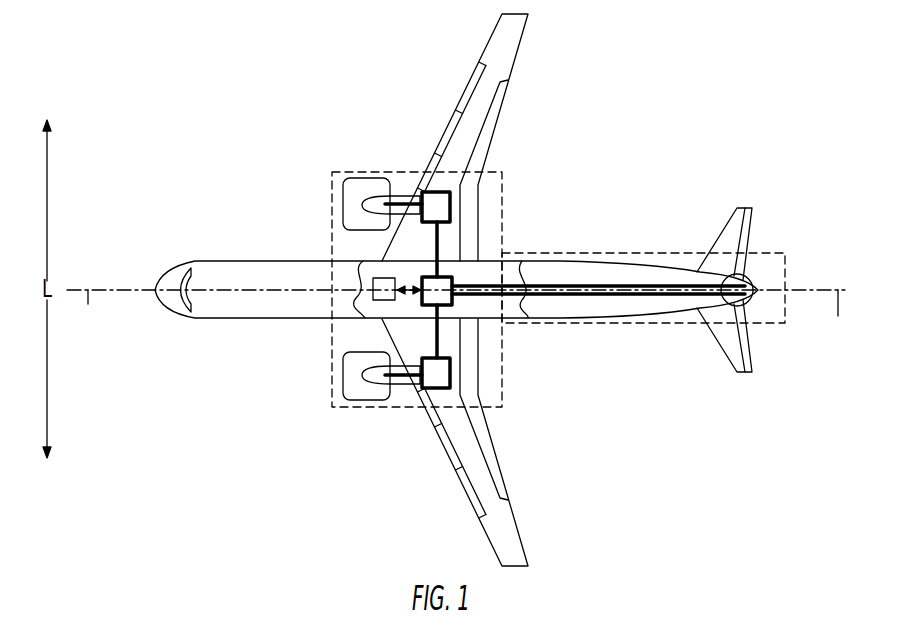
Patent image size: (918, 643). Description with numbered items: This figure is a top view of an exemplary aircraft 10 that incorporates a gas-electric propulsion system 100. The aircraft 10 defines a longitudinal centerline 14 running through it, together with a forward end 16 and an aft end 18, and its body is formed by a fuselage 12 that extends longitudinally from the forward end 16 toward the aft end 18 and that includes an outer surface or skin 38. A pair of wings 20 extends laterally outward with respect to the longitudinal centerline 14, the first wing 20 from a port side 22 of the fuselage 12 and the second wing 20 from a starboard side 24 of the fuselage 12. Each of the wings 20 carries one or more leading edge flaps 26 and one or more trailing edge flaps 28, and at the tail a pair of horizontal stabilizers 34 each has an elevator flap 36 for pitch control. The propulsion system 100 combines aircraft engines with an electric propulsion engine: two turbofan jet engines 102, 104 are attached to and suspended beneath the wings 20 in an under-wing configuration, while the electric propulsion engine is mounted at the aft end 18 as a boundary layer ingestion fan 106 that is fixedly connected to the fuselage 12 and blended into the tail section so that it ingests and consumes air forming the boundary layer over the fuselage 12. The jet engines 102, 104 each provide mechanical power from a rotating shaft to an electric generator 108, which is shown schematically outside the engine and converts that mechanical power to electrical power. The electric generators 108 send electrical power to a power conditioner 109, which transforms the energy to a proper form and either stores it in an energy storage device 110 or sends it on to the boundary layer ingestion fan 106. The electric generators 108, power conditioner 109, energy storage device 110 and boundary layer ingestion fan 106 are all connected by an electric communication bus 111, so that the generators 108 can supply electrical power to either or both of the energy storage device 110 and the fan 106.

The aircraft 10 is at (630, 95).
The fuselage 12 is at (201, 308).
The longitudinal centerline 14 is at (458, 319).
The forward end 16 is at (150, 310).
The aft end 18 is at (714, 372).
The wings 20 is at (476, 290).
The port side 22 is at (264, 334).
The starboard side 24 is at (272, 257).
The leading edge flaps 26 is at (447, 449).
The trailing edge flaps 28 is at (497, 452).
The horizontal stabilizers 34 is at (740, 269).
The elevator flap 36 is at (748, 227).
The outer surface or skin 38 is at (590, 312).
The propulsion system 100 is at (561, 255).
The turbofan jet engine 102 is at (347, 397).
The turbofan jet engine 104 is at (357, 182).
The boundary layer ingestion fan 106 is at (758, 256).
The electric generators 108 is at (450, 207).
The power conditioner 109 is at (453, 279).
The energy storage device 110 is at (375, 300).
The electric communication bus 111 is at (492, 312).